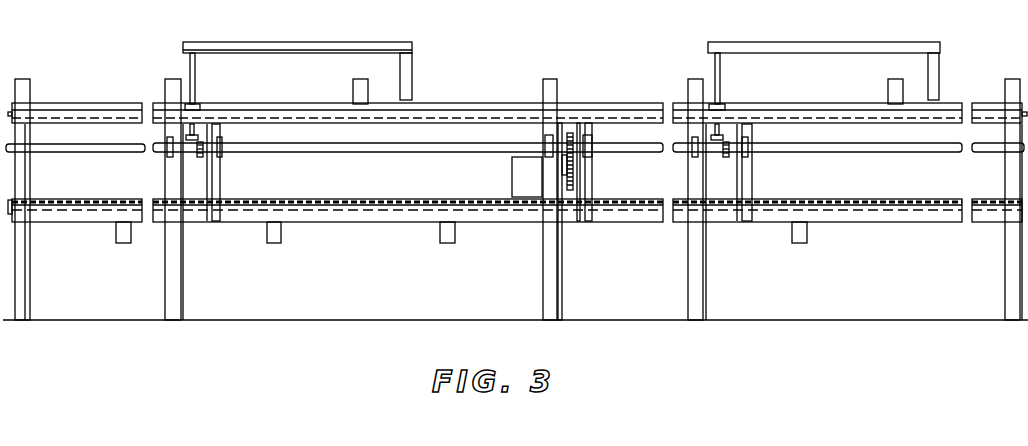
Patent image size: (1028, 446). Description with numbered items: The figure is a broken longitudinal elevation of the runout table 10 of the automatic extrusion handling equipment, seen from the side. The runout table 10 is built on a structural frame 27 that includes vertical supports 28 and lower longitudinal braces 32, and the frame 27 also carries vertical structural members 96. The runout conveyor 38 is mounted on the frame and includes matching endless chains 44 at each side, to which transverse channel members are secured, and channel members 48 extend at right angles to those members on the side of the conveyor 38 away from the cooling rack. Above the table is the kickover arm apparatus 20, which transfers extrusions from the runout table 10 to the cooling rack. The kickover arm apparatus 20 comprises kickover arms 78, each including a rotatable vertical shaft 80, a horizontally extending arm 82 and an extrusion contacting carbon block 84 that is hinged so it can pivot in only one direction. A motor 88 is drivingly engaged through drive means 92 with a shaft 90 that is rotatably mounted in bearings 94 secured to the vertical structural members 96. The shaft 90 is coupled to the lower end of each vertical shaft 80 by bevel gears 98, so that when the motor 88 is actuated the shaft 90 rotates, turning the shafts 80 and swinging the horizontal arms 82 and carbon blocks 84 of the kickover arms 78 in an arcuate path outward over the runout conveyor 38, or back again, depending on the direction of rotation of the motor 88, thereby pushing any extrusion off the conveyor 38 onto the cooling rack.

The runout table 10 is at (542, 268).
The kickover arm apparatus 20 is at (778, 111).
The structural frame 27 is at (181, 267).
The vertical supports 28 is at (30, 273).
The lower longitudinal braces 32 is at (358, 222).
The runout conveyor 38 is at (458, 239).
The endless chains 44 is at (393, 200).
The channel members 48 is at (558, 91).
The kickover arms 78 is at (313, 41).
The rotatable vertical shaft 80 is at (196, 79).
The horizontally extending arm 82 is at (268, 54).
The extrusion contacting carbon block 84 is at (410, 65).
The motor 88 is at (512, 178).
The shaft 90 is at (343, 153).
The drive means 92 is at (573, 170).
The bearings 94 is at (222, 160).
The vertical structural members 96 is at (222, 128).
The bevel gears 98 is at (200, 158).